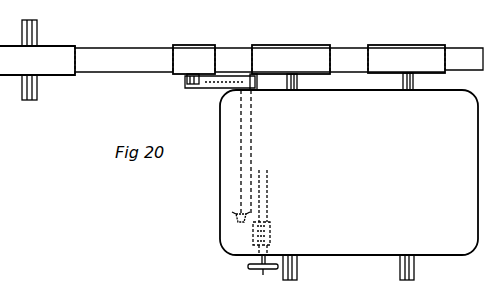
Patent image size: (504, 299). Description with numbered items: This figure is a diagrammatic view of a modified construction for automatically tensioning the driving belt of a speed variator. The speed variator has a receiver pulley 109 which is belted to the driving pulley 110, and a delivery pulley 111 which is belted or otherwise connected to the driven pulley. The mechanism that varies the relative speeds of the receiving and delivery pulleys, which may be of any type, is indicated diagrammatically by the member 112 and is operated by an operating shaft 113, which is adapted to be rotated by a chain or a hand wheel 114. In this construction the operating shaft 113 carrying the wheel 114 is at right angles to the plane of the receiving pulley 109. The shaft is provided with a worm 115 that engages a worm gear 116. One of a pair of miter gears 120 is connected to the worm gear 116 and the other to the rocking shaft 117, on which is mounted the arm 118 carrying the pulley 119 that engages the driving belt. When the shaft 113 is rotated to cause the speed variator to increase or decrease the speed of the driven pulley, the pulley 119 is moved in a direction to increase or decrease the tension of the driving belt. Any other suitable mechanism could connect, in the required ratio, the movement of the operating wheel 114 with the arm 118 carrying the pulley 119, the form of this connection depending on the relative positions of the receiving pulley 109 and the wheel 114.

The receiver pulley 109 is at (268, 44).
The driving pulley 110 is at (45, 44).
The delivery pulley 111 is at (380, 44).
The speed varying mechanism 112 is at (455, 240).
The operating shaft 113 is at (258, 258).
The hand wheel 114 is at (263, 270).
The worm 115 is at (270, 236).
The worm gear 116 is at (262, 212).
The rocking shaft 117 is at (252, 141).
The arm 118 is at (190, 83).
The pulley 119 is at (187, 44).
The miter gears 120 is at (253, 238).